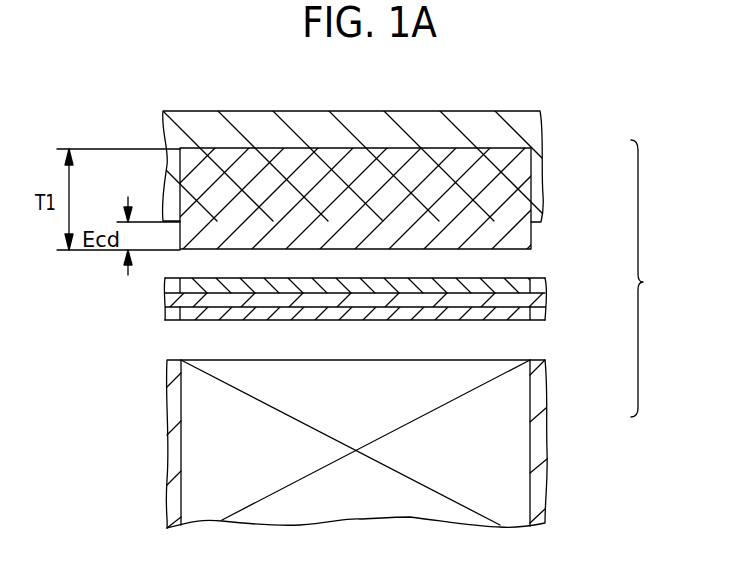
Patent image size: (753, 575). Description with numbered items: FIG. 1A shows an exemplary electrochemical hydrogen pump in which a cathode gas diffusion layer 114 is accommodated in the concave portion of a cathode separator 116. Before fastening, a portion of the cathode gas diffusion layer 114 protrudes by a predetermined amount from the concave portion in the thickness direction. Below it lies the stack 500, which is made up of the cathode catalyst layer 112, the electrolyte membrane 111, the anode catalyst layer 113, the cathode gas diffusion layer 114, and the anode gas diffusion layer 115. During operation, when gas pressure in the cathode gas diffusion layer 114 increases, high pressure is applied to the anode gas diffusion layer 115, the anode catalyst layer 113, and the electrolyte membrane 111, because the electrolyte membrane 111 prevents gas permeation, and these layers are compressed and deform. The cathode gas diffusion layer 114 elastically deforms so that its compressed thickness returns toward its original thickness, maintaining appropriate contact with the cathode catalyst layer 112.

The cathode separator 116 is at (523, 128).
The cathode gas diffusion layer 114 is at (502, 180).
The cathode catalyst layer 112 is at (497, 282).
The electrolyte membrane 111 is at (528, 298).
The anode catalyst layer 113 is at (495, 316).
The anode gas diffusion layer 115 is at (512, 407).
The stack 500 is at (657, 278).